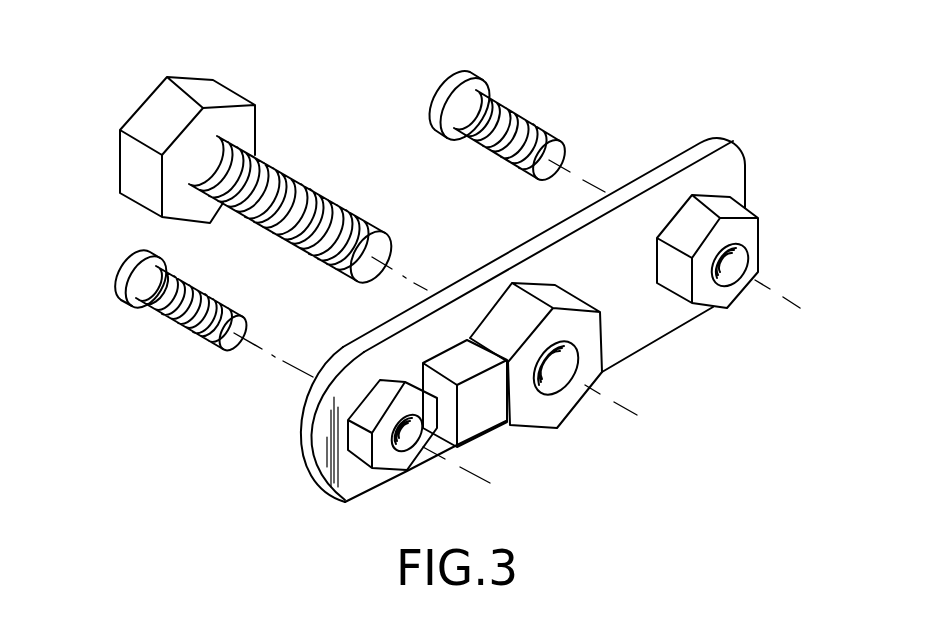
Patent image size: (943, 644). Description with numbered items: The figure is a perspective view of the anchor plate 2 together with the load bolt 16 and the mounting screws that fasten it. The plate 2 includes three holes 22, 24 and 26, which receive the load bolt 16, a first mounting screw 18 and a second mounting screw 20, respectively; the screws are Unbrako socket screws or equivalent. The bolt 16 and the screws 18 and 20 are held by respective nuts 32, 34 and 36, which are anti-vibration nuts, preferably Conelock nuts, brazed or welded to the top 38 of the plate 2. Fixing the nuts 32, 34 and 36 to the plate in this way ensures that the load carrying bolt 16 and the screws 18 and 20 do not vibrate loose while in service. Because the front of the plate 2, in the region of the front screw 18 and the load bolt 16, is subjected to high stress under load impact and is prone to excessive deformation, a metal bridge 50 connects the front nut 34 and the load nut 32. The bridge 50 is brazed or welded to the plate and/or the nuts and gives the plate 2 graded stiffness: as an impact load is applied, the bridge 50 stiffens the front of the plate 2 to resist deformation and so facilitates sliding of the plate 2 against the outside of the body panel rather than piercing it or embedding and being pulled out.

The plate 2 is at (735, 142).
The load bolt 16 is at (222, 93).
The first mounting screw 18 is at (172, 318).
The second mounting screw 20 is at (518, 110).
The hole 22 is at (553, 367).
The hole 24 is at (408, 440).
The hole 26 is at (728, 270).
The load nut 32 is at (556, 354).
The front nut 34 is at (405, 414).
The nut 36 is at (730, 254).
The top of the plate 38 is at (643, 323).
The metal bridge 50 is at (482, 413).